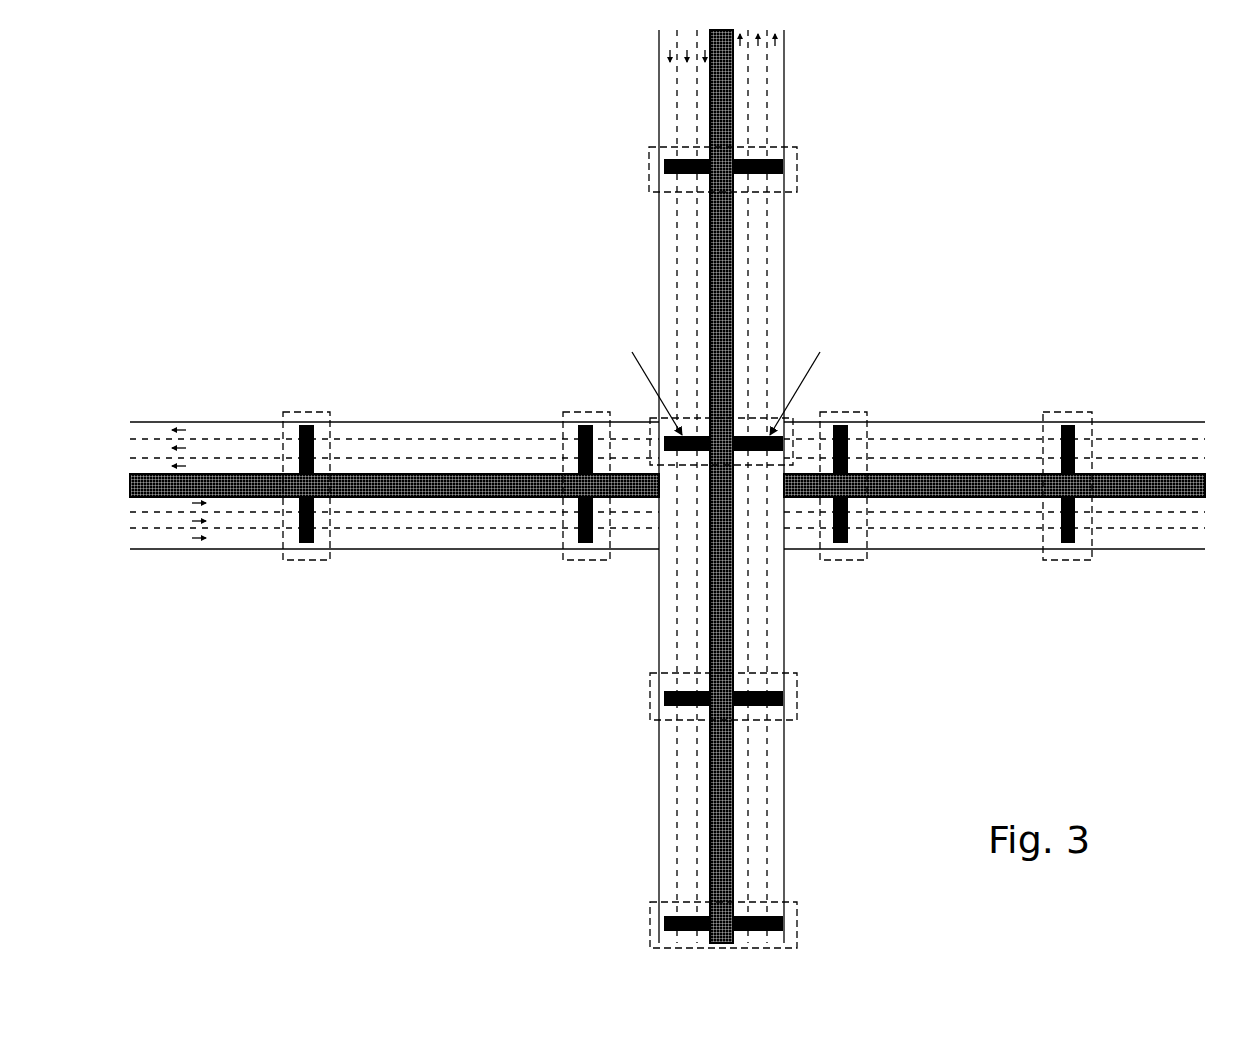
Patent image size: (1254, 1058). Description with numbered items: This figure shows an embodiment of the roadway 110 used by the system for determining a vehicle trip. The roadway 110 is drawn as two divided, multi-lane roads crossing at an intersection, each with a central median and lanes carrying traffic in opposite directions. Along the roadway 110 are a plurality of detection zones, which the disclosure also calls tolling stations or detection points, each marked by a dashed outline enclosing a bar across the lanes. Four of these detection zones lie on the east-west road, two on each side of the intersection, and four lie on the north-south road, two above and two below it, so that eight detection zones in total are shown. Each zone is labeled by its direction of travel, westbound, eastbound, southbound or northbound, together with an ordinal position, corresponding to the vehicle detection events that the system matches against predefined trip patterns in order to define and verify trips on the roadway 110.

The roadway 110 is at (657, 95).